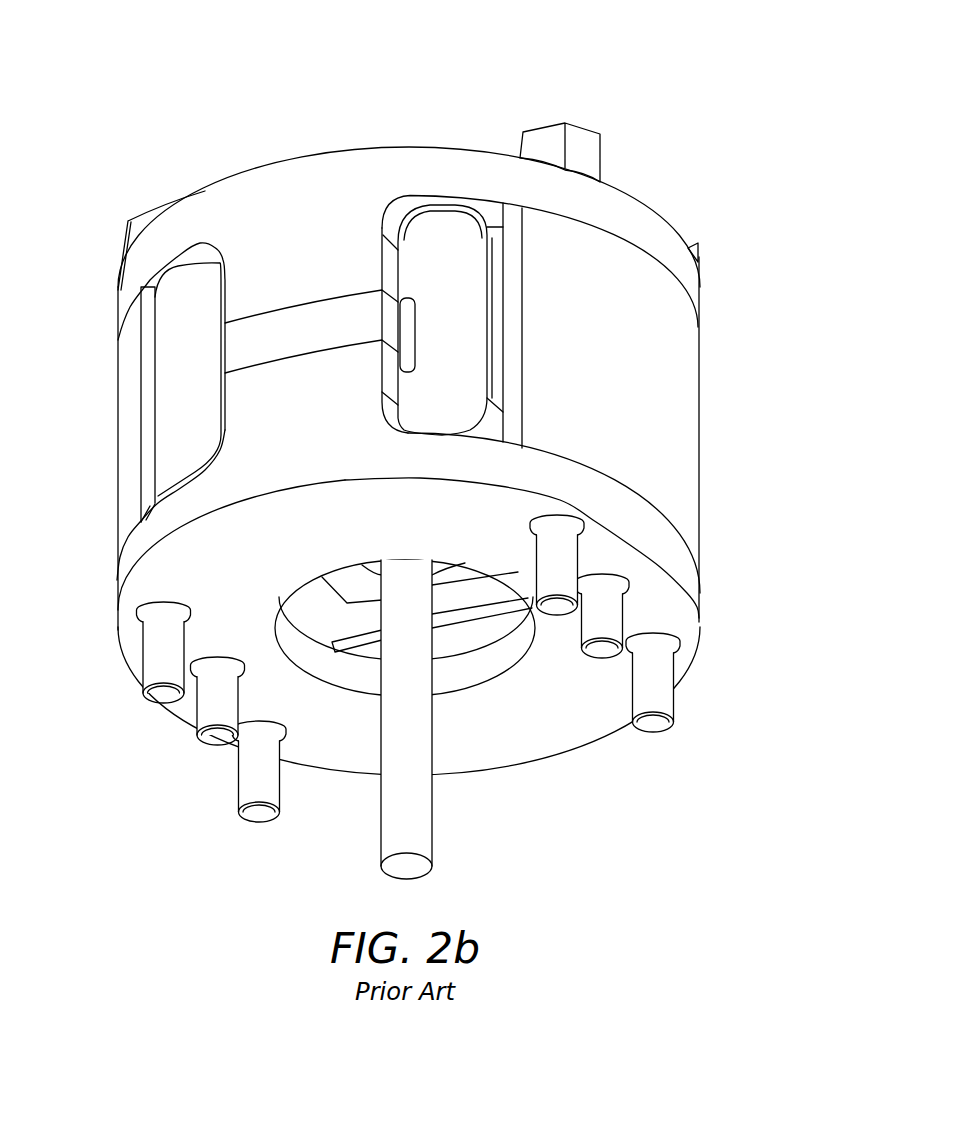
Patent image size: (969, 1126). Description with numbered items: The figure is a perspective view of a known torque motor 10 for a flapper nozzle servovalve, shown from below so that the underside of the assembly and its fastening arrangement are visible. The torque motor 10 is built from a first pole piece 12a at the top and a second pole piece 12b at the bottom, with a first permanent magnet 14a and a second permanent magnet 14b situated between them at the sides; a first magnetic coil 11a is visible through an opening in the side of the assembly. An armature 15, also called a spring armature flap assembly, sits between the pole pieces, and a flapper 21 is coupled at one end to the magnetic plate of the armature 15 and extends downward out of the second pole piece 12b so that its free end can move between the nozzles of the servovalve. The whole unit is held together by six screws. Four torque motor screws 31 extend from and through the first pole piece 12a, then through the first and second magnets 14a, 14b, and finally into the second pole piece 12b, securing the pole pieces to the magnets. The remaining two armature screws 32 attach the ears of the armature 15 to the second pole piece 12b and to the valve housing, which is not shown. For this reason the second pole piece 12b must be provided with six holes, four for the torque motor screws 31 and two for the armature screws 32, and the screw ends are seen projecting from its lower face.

The torque motor 10 is at (603, 62).
The first magnetic coil 11a is at (172, 373).
The first pole piece 12a is at (358, 147).
The second pole piece 12b is at (530, 752).
The first permanent magnet 14a is at (128, 427).
The second permanent magnet 14b is at (692, 411).
The armature 15 is at (297, 343).
The flapper 21 is at (430, 826).
The torque motor screw 31 is at (541, 563).
The armature screw 32 is at (615, 612).